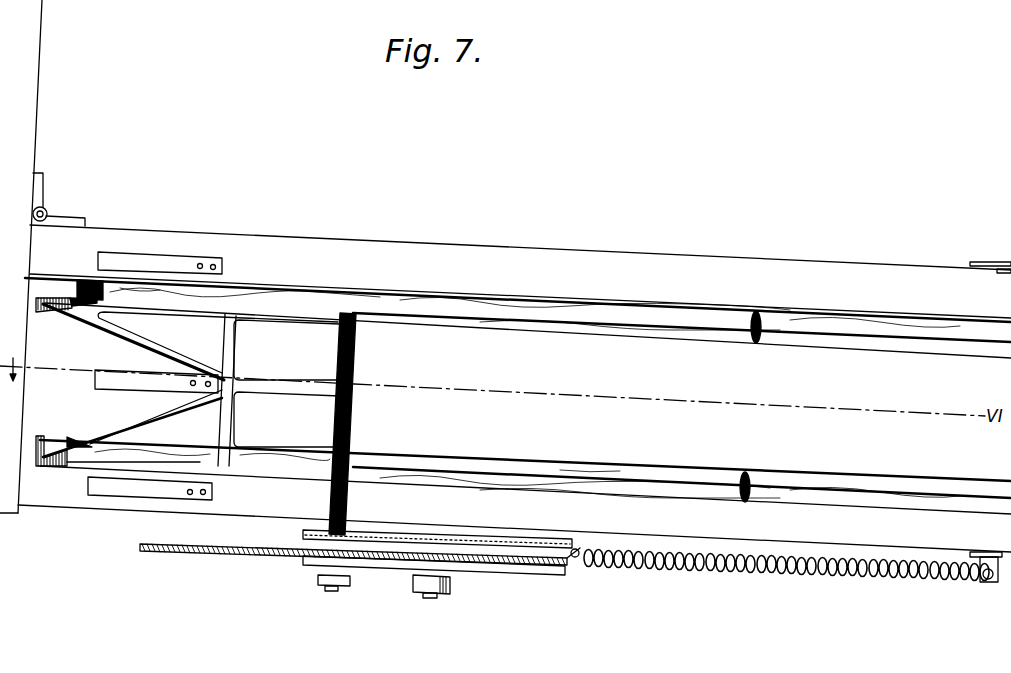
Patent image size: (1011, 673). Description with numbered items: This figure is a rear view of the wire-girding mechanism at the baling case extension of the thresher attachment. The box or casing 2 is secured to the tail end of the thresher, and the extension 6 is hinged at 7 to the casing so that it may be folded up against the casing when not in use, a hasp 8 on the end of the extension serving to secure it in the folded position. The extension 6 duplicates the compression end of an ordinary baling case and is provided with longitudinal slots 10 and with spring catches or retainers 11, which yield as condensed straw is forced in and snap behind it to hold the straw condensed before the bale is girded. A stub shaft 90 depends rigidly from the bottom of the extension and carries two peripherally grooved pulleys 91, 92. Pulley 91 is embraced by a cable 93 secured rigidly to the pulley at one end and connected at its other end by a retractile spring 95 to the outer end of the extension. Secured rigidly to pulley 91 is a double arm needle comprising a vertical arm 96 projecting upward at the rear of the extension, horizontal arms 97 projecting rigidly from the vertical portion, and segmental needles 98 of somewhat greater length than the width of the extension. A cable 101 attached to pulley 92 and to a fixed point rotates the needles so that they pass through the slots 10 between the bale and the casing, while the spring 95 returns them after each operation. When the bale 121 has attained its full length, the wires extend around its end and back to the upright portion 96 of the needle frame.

The box or casing 2 is at (42, 112).
The extension 6 is at (520, 265).
The hinge 7 is at (59, 199).
The hasp 8 is at (984, 264).
The longitudinal slots 10 is at (452, 305).
The spring catches or retainers 11 is at (98, 258).
The stub shaft 90 is at (433, 598).
The pulley 91 is at (302, 536).
The pulley 92 is at (304, 561).
The cable 93 is at (554, 574).
The retractile spring 95 is at (787, 568).
The arm 96 is at (356, 414).
The horizontal arms 97 is at (186, 313).
The segmental arms or needles 98 is at (44, 312).
The cable 101 is at (199, 553).
The bale 121 is at (734, 342).